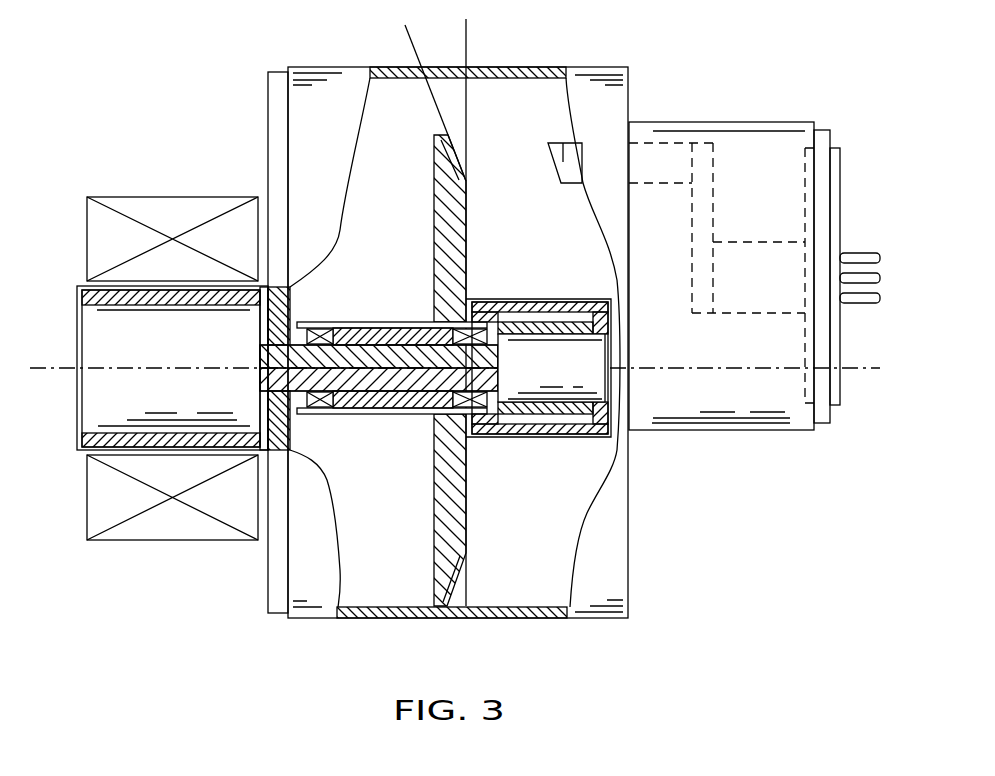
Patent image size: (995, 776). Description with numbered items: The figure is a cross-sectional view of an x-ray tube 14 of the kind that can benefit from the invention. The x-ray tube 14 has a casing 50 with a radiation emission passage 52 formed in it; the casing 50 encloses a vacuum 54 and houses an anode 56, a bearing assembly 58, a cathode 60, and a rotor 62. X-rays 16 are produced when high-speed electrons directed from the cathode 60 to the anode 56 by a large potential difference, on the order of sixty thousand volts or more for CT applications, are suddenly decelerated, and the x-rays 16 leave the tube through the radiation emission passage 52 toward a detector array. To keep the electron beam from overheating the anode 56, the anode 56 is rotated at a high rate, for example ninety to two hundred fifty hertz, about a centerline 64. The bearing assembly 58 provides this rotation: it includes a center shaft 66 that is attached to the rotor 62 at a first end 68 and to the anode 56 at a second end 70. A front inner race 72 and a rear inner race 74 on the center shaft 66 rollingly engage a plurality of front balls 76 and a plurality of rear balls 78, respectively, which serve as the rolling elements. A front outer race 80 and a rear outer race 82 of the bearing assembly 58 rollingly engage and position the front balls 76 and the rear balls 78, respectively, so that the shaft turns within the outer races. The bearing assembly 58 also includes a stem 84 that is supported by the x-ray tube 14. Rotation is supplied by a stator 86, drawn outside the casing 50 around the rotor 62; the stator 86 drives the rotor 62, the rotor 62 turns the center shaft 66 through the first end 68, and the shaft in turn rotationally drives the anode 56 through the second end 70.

The x-ray tube 14 is at (692, 46).
The x-rays 16 is at (445, 50).
The casing 50 is at (607, 542).
The radiation emission passage 52 is at (380, 67).
The vacuum 54 is at (517, 120).
The anode 56 is at (447, 247).
The bearing assembly 58 is at (376, 316).
The cathode 60 is at (565, 147).
The rotor 62 is at (78, 393).
The centerline 64 is at (863, 370).
The center shaft 66 is at (392, 380).
The first end 68 is at (262, 350).
The second end 70 is at (488, 312).
The front inner race 72 is at (493, 416).
The rear inner race 74 is at (350, 410).
The front balls 76 is at (470, 337).
The rear balls 78 is at (318, 337).
The front outer race 80 is at (453, 318).
The rear outer race 82 is at (331, 330).
The stem 84 is at (412, 414).
The stator 86 is at (178, 212).